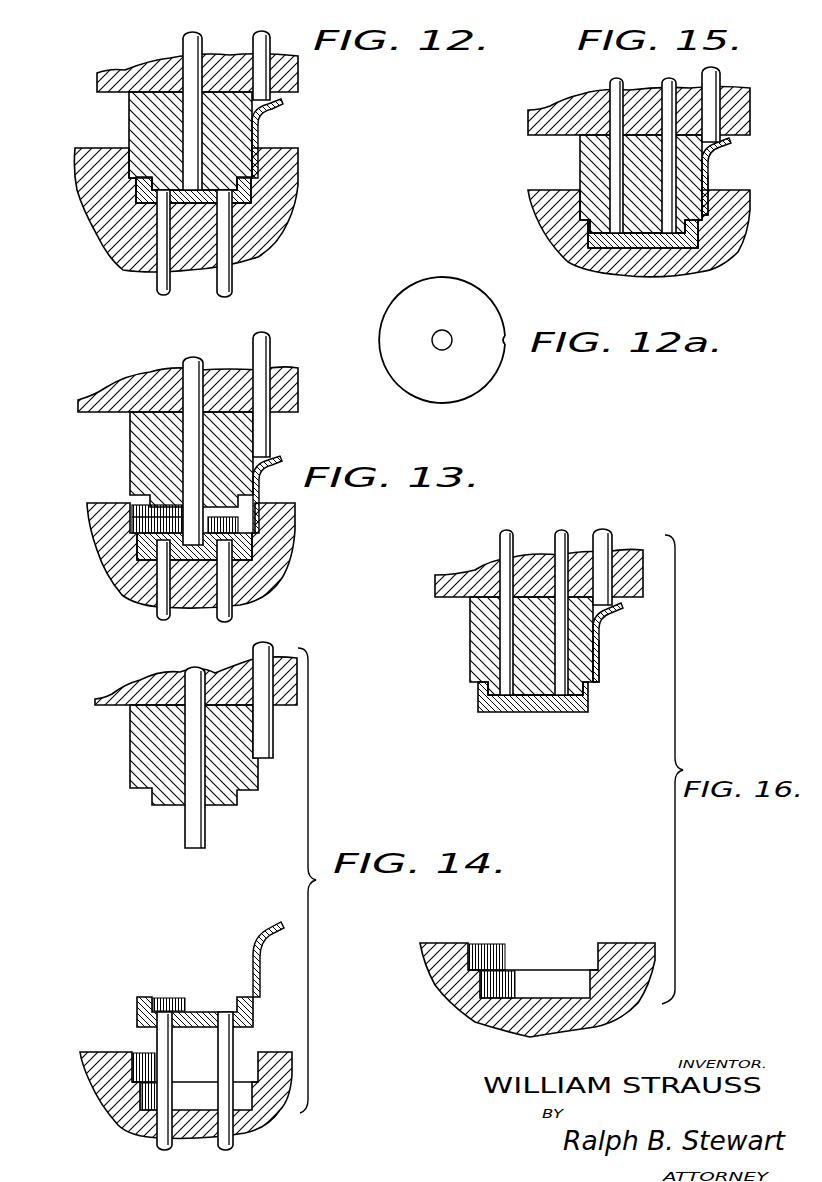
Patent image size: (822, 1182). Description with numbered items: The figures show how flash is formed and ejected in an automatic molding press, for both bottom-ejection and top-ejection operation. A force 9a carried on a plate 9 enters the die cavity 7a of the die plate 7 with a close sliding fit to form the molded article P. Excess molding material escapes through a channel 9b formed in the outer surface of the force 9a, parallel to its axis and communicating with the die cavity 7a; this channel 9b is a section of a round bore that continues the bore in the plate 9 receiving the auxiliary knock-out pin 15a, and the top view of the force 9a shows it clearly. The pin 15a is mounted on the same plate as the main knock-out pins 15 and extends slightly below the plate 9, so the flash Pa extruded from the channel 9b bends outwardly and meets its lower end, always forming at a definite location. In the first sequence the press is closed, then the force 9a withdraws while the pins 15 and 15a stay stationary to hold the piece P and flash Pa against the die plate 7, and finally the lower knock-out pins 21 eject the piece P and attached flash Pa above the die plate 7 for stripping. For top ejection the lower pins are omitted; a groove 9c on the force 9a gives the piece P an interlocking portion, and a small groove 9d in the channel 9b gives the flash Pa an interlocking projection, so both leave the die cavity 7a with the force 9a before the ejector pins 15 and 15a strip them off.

In FIG. 12, the die plate 7 is at (100, 212).
In FIG. 13, the die plate 7 is at (108, 568).
In FIG. 14, the die plate 7 is at (110, 1117).
In FIG. 15, the die plate 7 is at (556, 255).
In FIG. 16, the die plate 7 is at (458, 1013).
In FIG. 12, the die cavity 7a is at (238, 198).
In FIG. 13, the die cavity 7a is at (185, 519).
In FIG. 14, the die cavity 7a is at (256, 1062).
In FIG. 16, the die cavity 7a is at (488, 947).
In FIG. 12, the plate 9 is at (110, 75).
In FIG. 13, the plate 9 is at (131, 386).
In FIG. 14, the plate 9 is at (122, 700).
In FIG. 15, the plate 9 is at (569, 103).
In FIG. 16, the plate 9 is at (466, 575).
In FIG. 12, the force 9a is at (135, 110).
In FIG. 12A, the force 9a is at (458, 396).
In FIG. 13, the force 9a is at (138, 440).
In FIG. 14, the force 9a is at (132, 749).
In FIG. 15, the force 9a is at (588, 152).
In FIG. 16, the force 9a is at (473, 645).
In FIG. 12A, the channel 9b is at (507, 340).
In FIG. 15, the groove 9c is at (665, 246).
In FIG. 16, the groove 9c is at (493, 691).
In FIG. 15, the small groove 9d is at (709, 183).
In FIG. 16, the small groove 9d is at (600, 656).
In FIG. 12, the main knock-out pins 15 is at (183, 42).
In FIG. 13, the main knock-out pins 15 is at (205, 352).
In FIG. 14, the main knock-out pins 15 is at (193, 669).
In FIG. 15, the main knock-out pins 15 is at (662, 84).
In FIG. 16, the main knock-out pins 15 is at (560, 531).
In FIG. 12, the auxiliary knock-out pin 15a is at (253, 40).
In FIG. 13, the auxiliary knock-out pin 15a is at (272, 348).
In FIG. 14, the auxiliary knock-out pin 15a is at (264, 645).
In FIG. 15, the auxiliary knock-out pin 15a is at (722, 77).
In FIG. 16, the auxiliary knock-out pin 15a is at (605, 530).
In FIG. 12, the lower knock-out pins 21 is at (218, 285).
In FIG. 13, the lower knock-out pins 21 is at (220, 610).
In FIG. 14, the lower knock-out pins 21 is at (207, 1149).
In FIG. 12, the molded article P is at (252, 183).
In FIG. 13, the molded article P is at (254, 553).
In FIG. 14, the molded article P is at (142, 996).
In FIG. 15, the molded article P is at (610, 250).
In FIG. 16, the molded article P is at (543, 704).
In FIG. 12, the flash Pa is at (274, 105).
In FIG. 13, the flash Pa is at (281, 458).
In FIG. 14, the flash Pa is at (262, 940).
In FIG. 15, the flash Pa is at (726, 142).
In FIG. 16, the flash Pa is at (606, 610).